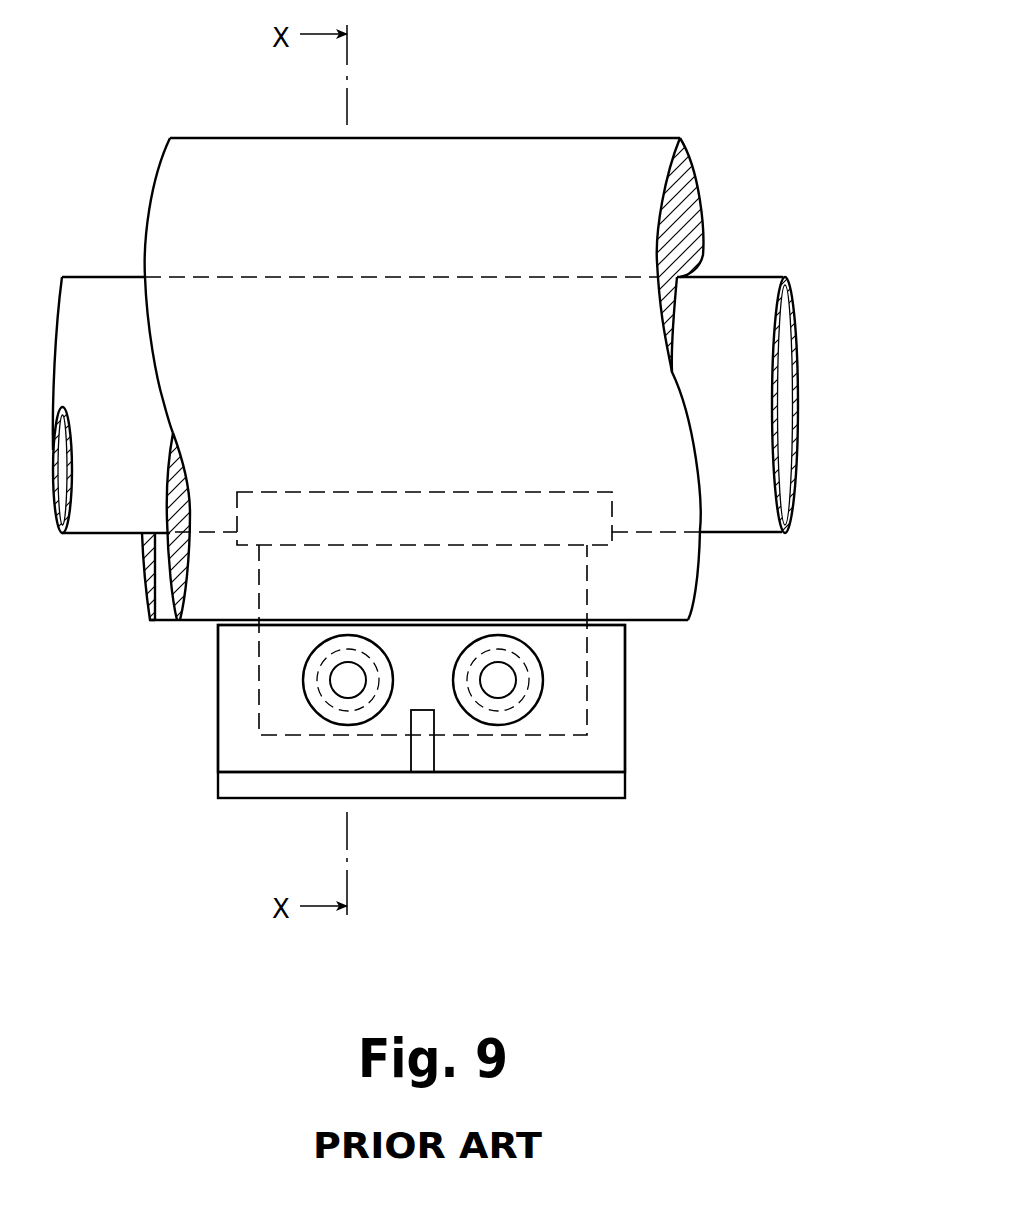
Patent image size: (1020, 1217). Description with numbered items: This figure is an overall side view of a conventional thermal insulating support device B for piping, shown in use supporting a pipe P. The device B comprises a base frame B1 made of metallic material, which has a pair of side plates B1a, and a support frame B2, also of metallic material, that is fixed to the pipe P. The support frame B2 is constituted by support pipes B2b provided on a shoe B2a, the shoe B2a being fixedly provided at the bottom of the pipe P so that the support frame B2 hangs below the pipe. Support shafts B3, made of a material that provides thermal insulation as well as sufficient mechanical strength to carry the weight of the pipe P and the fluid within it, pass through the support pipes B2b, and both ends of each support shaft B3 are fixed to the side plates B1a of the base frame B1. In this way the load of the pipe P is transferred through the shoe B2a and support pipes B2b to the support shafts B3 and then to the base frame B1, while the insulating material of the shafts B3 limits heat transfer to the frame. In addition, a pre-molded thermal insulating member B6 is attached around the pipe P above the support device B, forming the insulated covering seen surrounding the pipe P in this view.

The pre-molded thermal insulating member B6 is at (499, 140).
The pipe P is at (800, 410).
The thermal insulating support device B is at (458, 697).
The base frame B1 is at (640, 733).
The side plates B1a is at (615, 685).
The support frame B2 is at (598, 573).
The shoe B2a is at (272, 697).
The support pipes B2b is at (337, 705).
The support shafts B3 is at (352, 688).